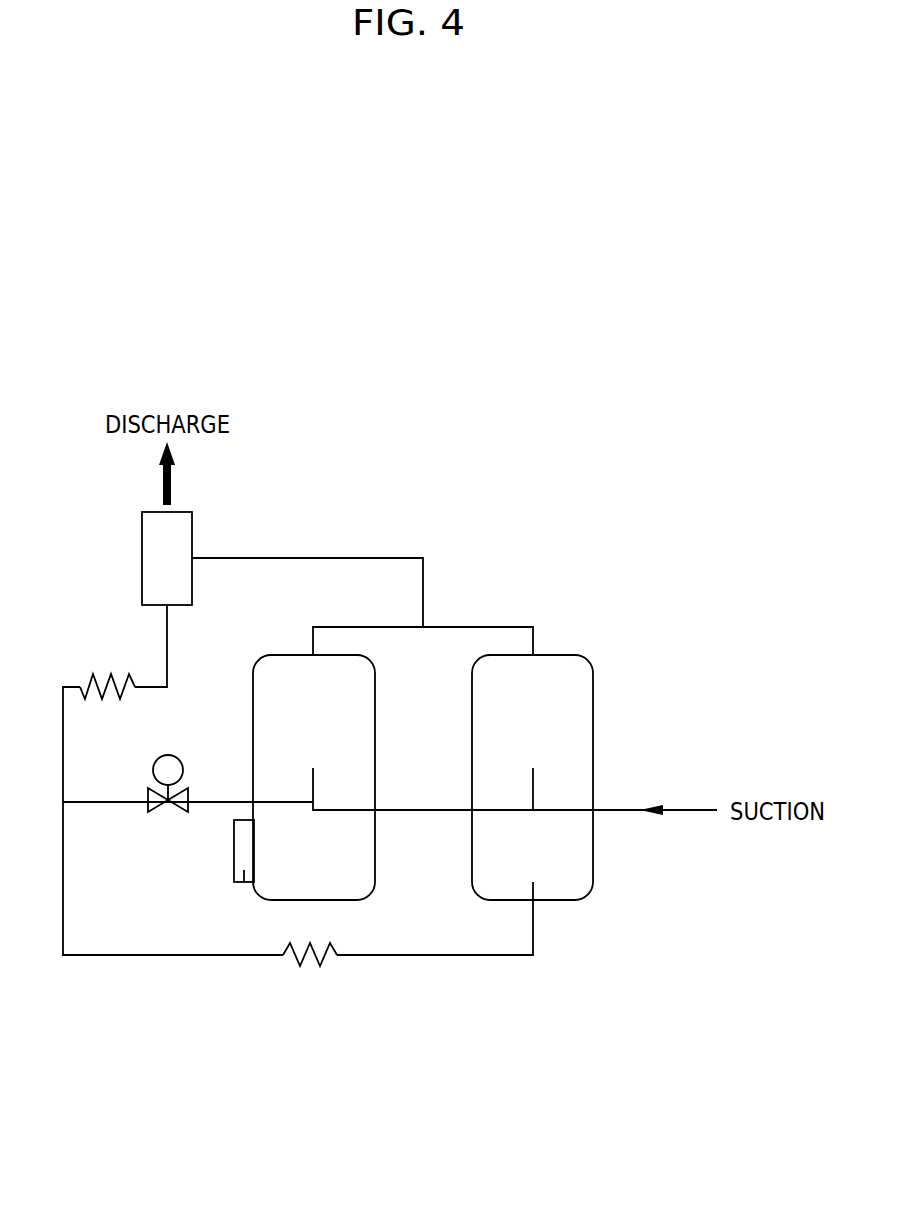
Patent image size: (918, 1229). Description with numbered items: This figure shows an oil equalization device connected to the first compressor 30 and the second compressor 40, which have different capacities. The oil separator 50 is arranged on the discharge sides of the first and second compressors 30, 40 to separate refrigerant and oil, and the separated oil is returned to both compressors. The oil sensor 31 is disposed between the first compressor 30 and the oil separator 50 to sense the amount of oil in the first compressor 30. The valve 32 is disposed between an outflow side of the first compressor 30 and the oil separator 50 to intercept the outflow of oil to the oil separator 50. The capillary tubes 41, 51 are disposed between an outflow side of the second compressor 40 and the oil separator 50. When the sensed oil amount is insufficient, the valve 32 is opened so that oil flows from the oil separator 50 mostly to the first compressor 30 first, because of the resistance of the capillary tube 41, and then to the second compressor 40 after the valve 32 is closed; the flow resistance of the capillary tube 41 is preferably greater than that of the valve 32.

The first compressor 30 is at (352, 890).
The oil sensor 31 is at (242, 885).
The valve 32 is at (163, 813).
The second compressor 40 is at (580, 887).
The capillary tube 41 is at (318, 965).
The oil separator 50 is at (142, 557).
The capillary tube 51 is at (115, 677).